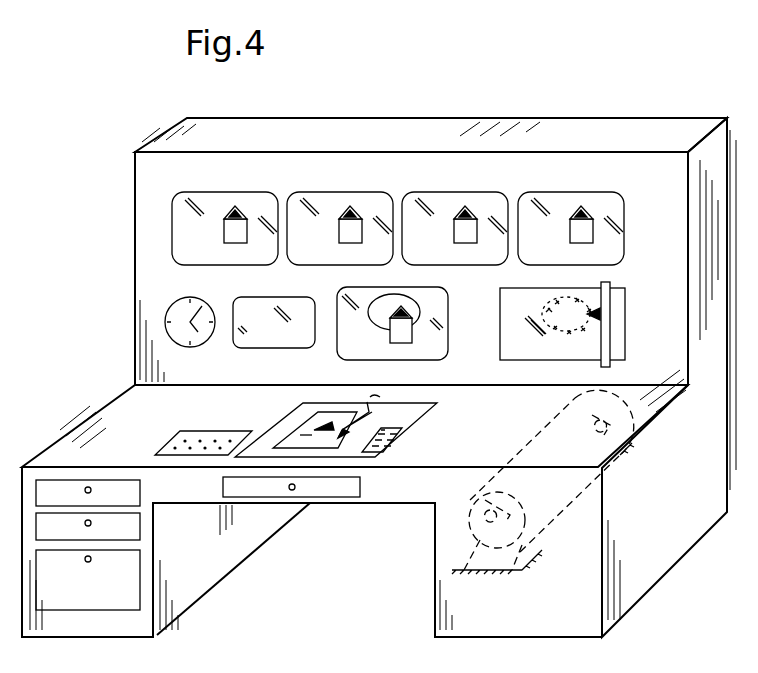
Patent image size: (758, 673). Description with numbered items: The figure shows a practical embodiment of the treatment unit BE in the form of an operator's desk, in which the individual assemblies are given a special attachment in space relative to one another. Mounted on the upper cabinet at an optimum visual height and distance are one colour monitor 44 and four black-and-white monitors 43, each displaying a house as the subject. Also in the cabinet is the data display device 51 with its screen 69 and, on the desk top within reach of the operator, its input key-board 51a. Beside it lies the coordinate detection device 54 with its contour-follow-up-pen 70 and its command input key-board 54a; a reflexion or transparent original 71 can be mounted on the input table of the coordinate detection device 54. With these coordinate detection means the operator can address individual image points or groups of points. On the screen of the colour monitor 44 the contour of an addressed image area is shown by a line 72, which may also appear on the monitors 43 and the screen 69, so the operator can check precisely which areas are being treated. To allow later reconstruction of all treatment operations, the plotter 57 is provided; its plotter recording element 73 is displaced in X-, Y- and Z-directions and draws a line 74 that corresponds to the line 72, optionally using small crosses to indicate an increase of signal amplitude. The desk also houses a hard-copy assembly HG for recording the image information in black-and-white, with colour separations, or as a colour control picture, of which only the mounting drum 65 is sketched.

The black-and-white monitor 43 is at (270, 190).
The treatment unit BE is at (134, 274).
The colour monitor 44 is at (408, 332).
The line 72 is at (370, 318).
The screen 69 is at (290, 348).
The plotter 57 is at (567, 312).
The line 74 is at (545, 302).
The plotter recording element 73 is at (605, 282).
The data display device 51 is at (181, 423).
The input key-board 51a is at (144, 433).
The coordinate detection device 54 is at (350, 470).
The command input key-board 54a is at (400, 430).
The reflexion or transparent original 71 is at (293, 443).
The contour-follow-up-pen 70 is at (352, 430).
The mounting drum 65 is at (556, 530).
The hard-copy assembly HG is at (535, 627).